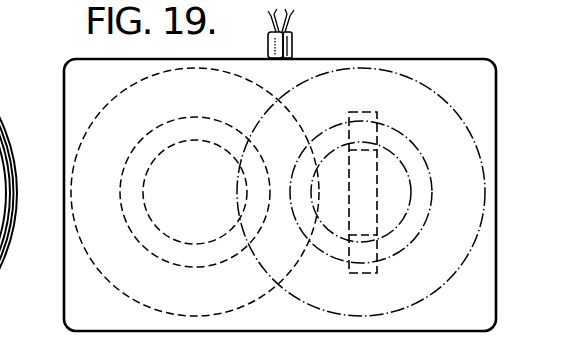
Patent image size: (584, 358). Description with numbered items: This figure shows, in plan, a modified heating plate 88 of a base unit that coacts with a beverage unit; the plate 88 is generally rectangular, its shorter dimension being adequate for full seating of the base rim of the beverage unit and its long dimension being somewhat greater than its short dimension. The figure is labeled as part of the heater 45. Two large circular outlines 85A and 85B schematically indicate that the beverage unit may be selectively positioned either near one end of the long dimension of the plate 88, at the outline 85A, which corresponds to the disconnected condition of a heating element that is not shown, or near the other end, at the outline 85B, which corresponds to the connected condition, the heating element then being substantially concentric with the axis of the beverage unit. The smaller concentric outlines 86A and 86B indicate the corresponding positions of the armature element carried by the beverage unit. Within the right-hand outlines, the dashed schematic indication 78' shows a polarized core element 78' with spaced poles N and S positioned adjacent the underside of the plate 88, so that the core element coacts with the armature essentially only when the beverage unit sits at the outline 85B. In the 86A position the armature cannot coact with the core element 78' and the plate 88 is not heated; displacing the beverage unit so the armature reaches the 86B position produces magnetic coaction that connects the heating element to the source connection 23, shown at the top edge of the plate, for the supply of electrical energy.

The heater 45 is at (285, 168).
The heating plate 88 is at (68, 78).
The source connection 23 is at (292, 40).
The beverage unit position 85A is at (100, 118).
The armature element position 86A is at (141, 226).
The beverage unit position 85B is at (457, 113).
The armature element position 86B is at (436, 198).
The polarized core element 78' is at (364, 199).
The north pole N is at (379, 115).
The south pole S is at (379, 271).